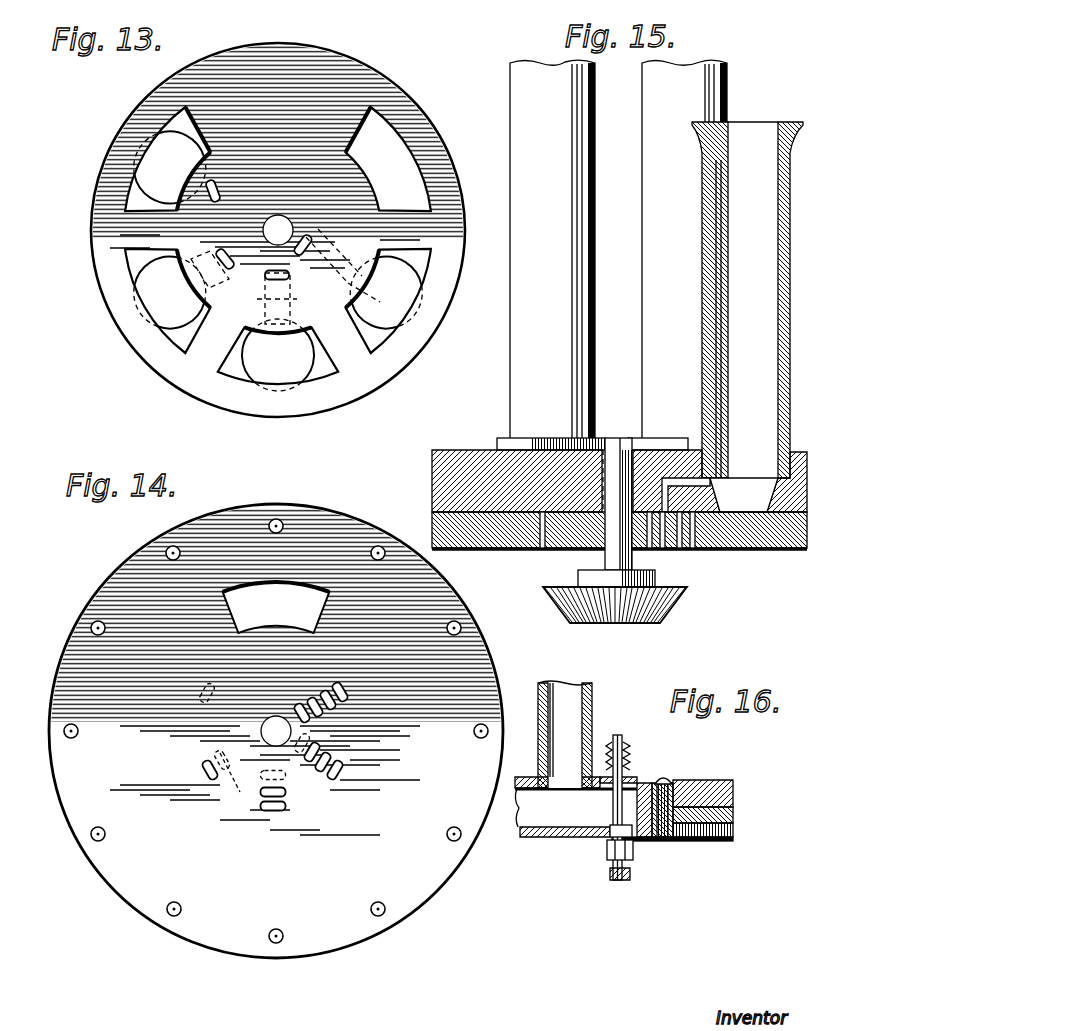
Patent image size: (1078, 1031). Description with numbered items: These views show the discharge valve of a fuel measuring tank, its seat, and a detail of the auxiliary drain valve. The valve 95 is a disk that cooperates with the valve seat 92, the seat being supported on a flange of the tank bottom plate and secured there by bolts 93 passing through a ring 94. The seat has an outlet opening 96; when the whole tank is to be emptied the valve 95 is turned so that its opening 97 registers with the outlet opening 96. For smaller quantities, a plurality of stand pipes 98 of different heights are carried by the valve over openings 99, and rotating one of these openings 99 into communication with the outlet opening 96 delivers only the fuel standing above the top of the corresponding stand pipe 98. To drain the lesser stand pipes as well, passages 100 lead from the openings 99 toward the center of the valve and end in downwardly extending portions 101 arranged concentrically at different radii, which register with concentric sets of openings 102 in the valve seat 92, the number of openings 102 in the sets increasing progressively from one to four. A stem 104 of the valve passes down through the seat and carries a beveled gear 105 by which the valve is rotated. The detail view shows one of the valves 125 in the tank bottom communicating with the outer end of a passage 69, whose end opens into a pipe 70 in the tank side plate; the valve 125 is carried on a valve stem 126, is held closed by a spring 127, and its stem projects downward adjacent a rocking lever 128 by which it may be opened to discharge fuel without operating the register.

In FIG. 16, the passages 69 is at (555, 818).
In FIG. 16, the pipes 70 is at (570, 715).
In FIG. 14, the valve seat 92 is at (363, 532).
In FIG. 15, the valve seat 92 is at (463, 550).
In FIG. 16, the valve seat 92 is at (713, 838).
In FIG. 16, the bolts 93 is at (658, 840).
In FIG. 16, the ring 94 is at (687, 778).
In FIG. 13, the valve 95 is at (427, 225).
In FIG. 15, the valve 95 is at (475, 450).
In FIG. 16, the valve 95 is at (733, 786).
In FIG. 14, the outlet opening 96 is at (323, 617).
In FIG. 13, the opening 97 is at (418, 180).
In FIG. 15, the stand pipes 98 is at (642, 158).
In FIG. 13, the openings 99 is at (150, 172).
In FIG. 15, the passages 100 is at (677, 483).
In FIG. 13, the downwardly extending portions 101 is at (209, 192).
In FIG. 14, the downwardly extending portions 101 is at (198, 697).
In FIG. 15, the downwardly extending portions 101 is at (744, 495).
In FIG. 14, the openings 102 is at (326, 682).
In FIG. 15, the openings 102 is at (543, 549).
In FIG. 15, the stem 104 is at (607, 542).
In FIG. 15, the beveled gear 105 is at (673, 617).
In FIG. 16, the valves 125 is at (632, 780).
In FIG. 16, the valve stems 126 is at (619, 735).
In FIG. 16, the springs 127 is at (632, 760).
In FIG. 16, the rocking levers 128 is at (625, 881).